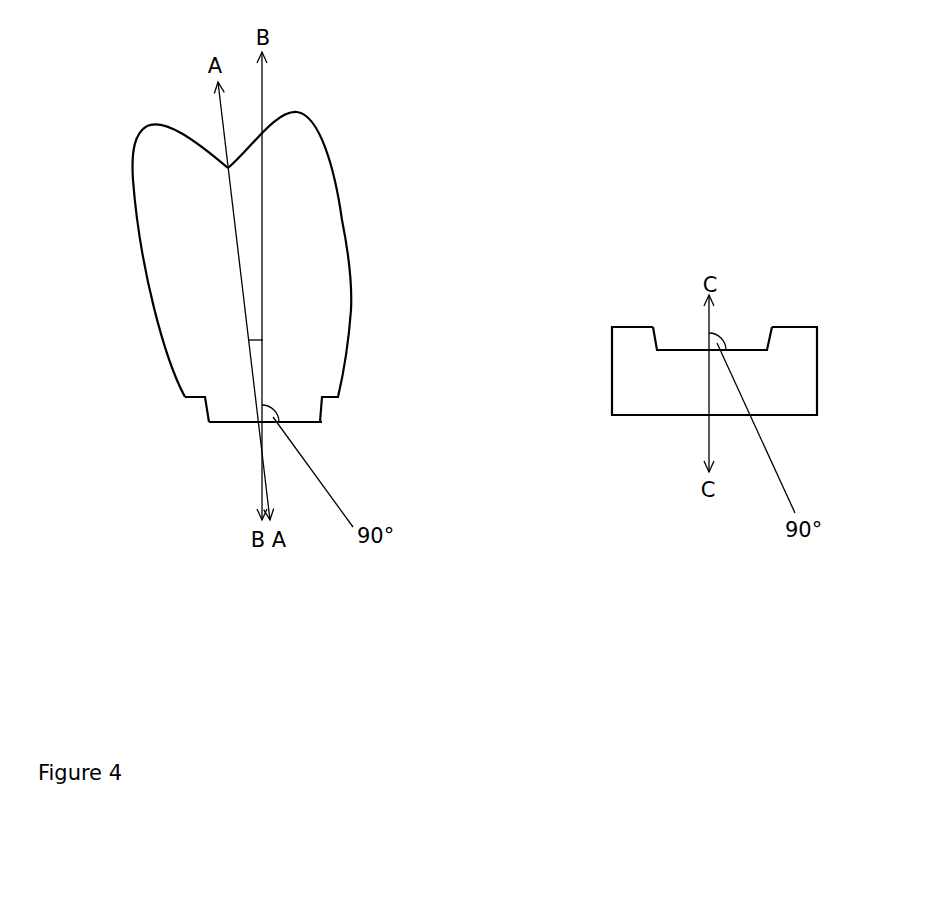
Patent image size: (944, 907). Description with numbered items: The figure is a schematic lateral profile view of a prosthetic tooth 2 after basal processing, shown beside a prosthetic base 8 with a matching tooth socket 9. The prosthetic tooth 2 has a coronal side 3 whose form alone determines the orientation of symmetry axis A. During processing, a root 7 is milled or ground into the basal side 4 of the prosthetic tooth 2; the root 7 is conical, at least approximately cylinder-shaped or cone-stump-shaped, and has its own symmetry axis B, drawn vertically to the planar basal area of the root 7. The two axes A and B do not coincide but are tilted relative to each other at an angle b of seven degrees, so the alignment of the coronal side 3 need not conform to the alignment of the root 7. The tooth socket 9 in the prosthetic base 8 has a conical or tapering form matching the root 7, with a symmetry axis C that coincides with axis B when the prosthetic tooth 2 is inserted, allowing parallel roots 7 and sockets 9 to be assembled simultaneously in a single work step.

The prosthetic tooth 2 is at (323, 230).
The coronal side 3 is at (180, 124).
The basal side 4 is at (227, 432).
The root 7 is at (303, 413).
The prosthetic base 8 is at (767, 393).
The tooth socket 9 is at (752, 333).
The angle b is at (258, 345).